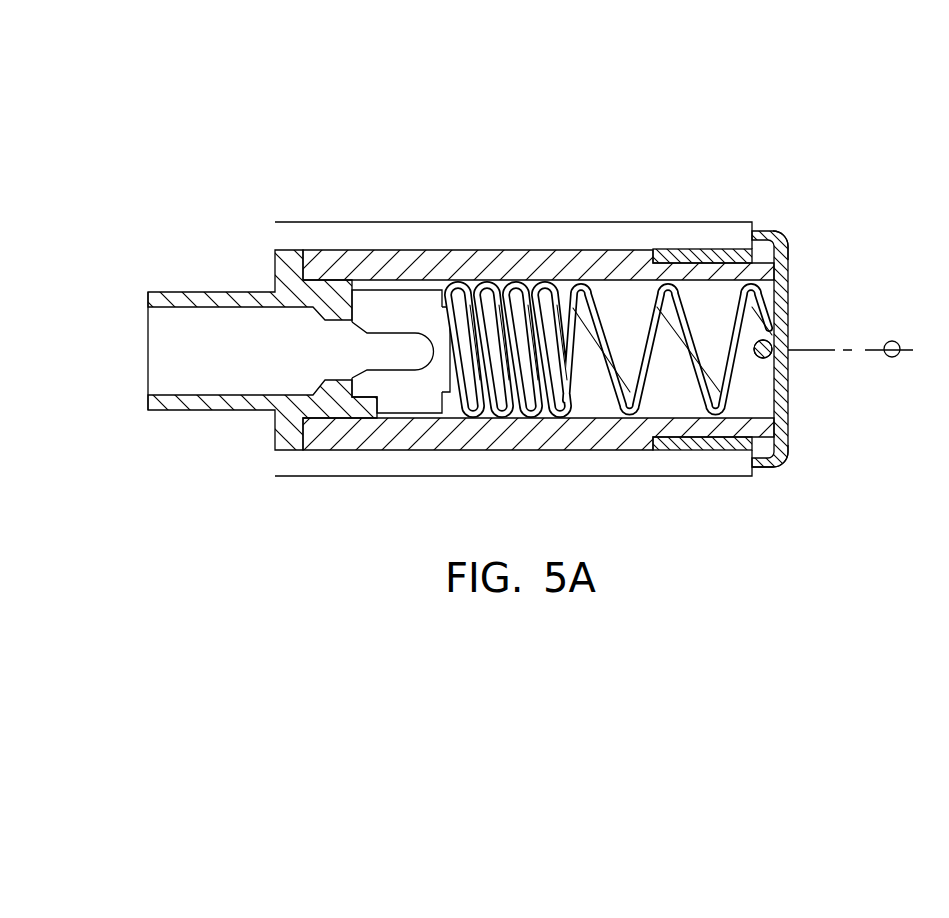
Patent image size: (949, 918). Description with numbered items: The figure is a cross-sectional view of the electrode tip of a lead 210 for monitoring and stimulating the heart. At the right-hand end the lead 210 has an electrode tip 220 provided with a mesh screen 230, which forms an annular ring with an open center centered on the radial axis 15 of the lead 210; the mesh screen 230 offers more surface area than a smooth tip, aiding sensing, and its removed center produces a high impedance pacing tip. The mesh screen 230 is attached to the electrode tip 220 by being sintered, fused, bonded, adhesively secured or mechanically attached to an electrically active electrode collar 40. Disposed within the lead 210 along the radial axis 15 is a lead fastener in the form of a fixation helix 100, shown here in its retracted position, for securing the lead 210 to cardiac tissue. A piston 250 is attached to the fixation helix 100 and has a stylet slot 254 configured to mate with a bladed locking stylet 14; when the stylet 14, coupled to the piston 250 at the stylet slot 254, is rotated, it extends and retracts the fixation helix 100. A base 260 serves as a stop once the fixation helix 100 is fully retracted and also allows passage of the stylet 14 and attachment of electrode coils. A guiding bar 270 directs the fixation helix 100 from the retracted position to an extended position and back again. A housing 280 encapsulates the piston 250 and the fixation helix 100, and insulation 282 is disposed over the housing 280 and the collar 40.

The lead 210 is at (325, 113).
The electrode tip 220 is at (784, 218).
The mesh screen 230 is at (783, 243).
The piston 250 is at (412, 346).
The stylet slot 254 is at (407, 335).
The base 260 is at (283, 285).
The guiding bar 270 is at (762, 362).
The housing 280 is at (546, 248).
The insulation 282 is at (302, 235).
The bladed locking stylet 14 is at (455, 397).
The fixation helix 100 is at (627, 397).
The electrode collar 40 is at (756, 455).
The radial axis 15 is at (892, 357).